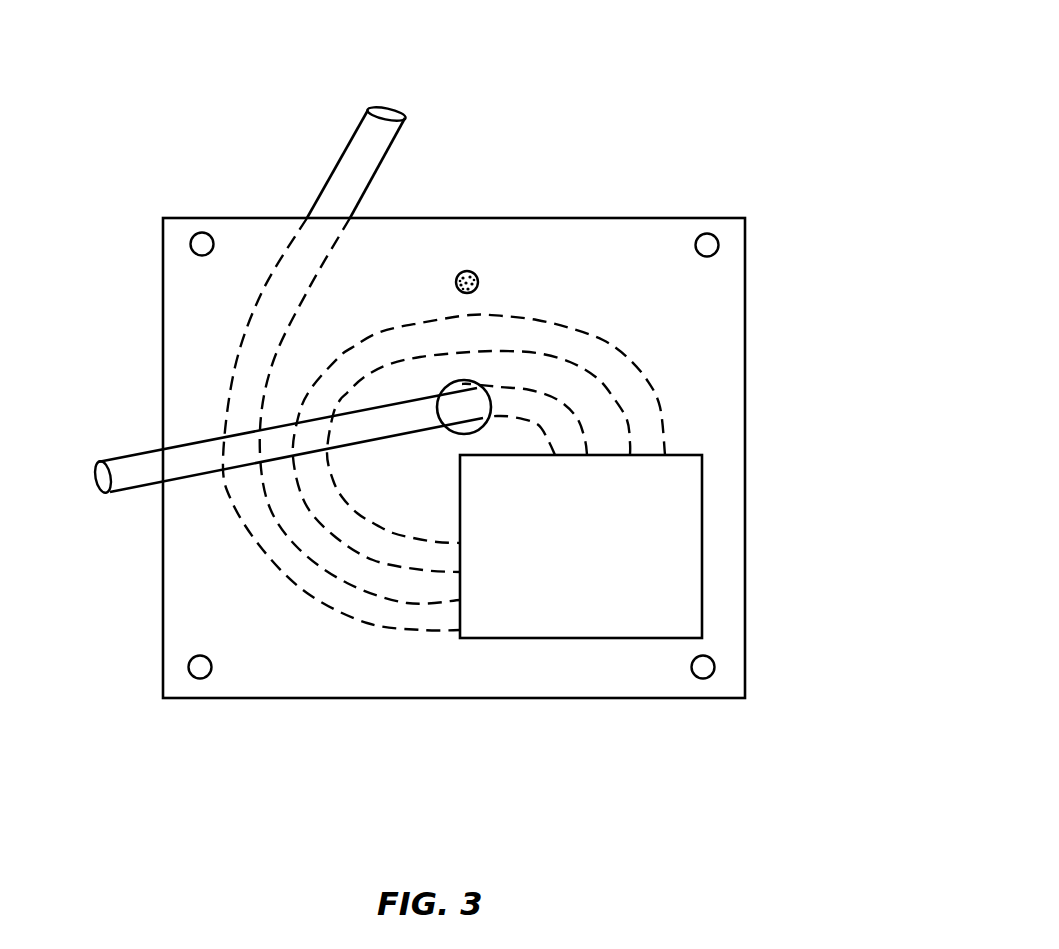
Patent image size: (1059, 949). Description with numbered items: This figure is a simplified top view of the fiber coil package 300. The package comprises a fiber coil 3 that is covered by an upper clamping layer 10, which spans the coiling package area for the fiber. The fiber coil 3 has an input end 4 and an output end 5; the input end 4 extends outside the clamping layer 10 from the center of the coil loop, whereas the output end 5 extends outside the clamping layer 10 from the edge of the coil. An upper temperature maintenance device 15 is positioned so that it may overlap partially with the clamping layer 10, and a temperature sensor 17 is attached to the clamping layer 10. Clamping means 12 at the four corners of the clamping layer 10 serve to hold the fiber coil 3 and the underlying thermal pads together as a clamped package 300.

The fiber coil package 300 is at (775, 64).
The upper clamping layer 10 is at (210, 610).
The clamping means 12 is at (192, 237).
The temperature sensor 17 is at (467, 270).
The output end 5 is at (336, 131).
The fiber coil 3 is at (338, 358).
The input end 4 is at (138, 452).
The upper temperature maintenance device 15 is at (550, 638).